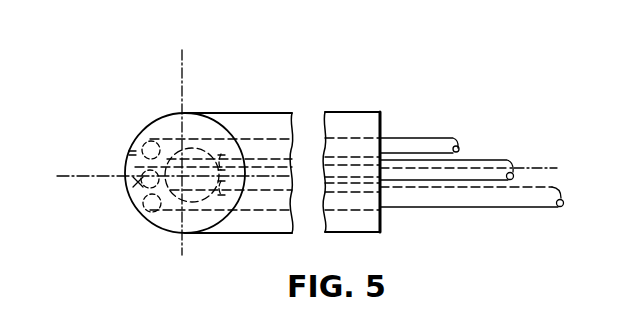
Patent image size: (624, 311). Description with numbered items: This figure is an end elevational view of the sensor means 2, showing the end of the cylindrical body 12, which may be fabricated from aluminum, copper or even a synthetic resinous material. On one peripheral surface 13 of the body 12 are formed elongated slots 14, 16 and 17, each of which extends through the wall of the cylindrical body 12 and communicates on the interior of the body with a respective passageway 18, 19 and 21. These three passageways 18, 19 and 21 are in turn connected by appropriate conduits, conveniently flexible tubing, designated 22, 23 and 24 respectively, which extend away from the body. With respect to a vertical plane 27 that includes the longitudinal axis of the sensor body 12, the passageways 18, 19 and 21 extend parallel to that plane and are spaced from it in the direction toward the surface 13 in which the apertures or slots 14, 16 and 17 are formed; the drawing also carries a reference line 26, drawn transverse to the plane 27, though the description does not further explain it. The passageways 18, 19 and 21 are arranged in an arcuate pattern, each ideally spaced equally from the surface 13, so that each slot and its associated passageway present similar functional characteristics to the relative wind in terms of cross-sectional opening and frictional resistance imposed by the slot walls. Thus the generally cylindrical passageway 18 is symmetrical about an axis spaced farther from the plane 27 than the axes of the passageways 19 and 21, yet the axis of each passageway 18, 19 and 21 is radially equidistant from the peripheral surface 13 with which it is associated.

The sensor means 2 is at (176, 114).
The cylindrical body 12 is at (197, 123).
The peripheral surface 13 is at (158, 114).
The elongated slot 14 is at (127, 175).
The elongated slot 16 is at (132, 153).
The elongated slot 17 is at (133, 198).
The passageway 18 is at (136, 183).
The passageway 19 is at (146, 143).
The passageway 21 is at (151, 211).
The conduit 22 is at (470, 163).
The conduit 23 is at (435, 145).
The conduit 24 is at (485, 197).
The axis 26 is at (65, 176).
The vertical plane 27 is at (182, 50).